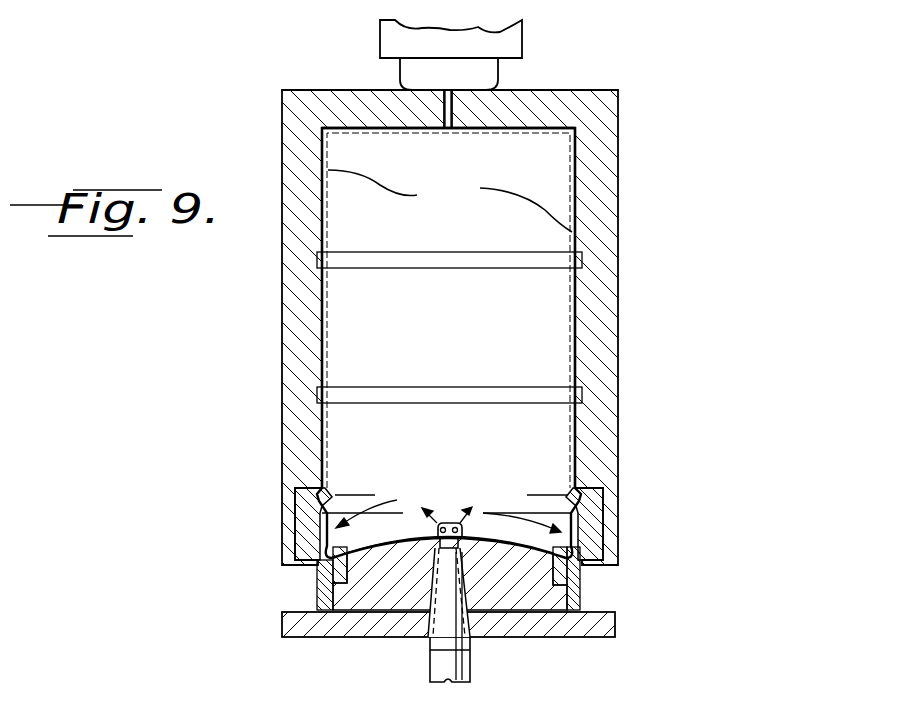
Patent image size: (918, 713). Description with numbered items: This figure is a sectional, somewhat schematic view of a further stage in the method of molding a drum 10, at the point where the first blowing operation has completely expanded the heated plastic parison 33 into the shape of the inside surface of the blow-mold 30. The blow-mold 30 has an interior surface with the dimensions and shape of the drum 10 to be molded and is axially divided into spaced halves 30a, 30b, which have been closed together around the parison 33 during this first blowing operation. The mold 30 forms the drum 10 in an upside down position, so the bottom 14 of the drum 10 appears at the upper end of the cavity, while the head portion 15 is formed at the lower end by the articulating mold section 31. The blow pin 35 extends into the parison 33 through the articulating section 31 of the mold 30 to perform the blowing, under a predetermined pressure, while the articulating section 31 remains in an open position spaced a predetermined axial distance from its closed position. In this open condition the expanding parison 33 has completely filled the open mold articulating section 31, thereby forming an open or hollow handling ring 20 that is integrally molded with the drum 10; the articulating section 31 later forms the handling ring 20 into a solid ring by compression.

The drum 10 is at (306, 353).
The bottom 14 is at (530, 126).
The head portion 15 is at (407, 528).
The handling ring 20 is at (300, 536).
The blow-mold 30 is at (458, 292).
The mold half 30a is at (286, 137).
The mold half 30b is at (610, 193).
The articulating mold section 31 is at (310, 588).
The plastic parison 33 is at (450, 201).
The blow pin 35 is at (470, 660).